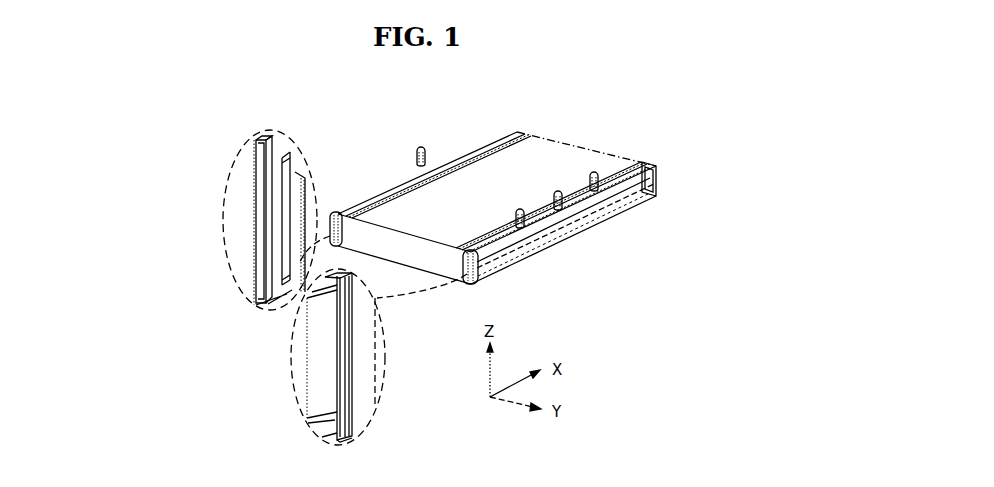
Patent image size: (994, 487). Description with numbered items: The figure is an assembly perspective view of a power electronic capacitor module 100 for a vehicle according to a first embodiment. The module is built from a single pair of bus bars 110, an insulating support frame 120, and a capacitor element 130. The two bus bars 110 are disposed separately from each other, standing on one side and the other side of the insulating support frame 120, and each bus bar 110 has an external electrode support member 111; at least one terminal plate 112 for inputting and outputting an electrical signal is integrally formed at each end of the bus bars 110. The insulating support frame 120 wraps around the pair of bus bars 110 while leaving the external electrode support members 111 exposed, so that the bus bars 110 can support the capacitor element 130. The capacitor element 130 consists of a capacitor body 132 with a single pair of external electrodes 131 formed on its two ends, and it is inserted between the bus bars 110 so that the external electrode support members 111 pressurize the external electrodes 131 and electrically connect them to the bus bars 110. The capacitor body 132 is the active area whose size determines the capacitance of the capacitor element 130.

The power electronic capacitor module 100 is at (407, 133).
The bus bar 110 is at (260, 189).
The external electrode support member 111 is at (286, 213).
The terminal plate 112 is at (416, 158).
The insulating support frame 120 is at (255, 138).
The capacitor element 130 is at (165, 244).
The external electrode 131 is at (308, 259).
The capacitor body 132 is at (313, 228).